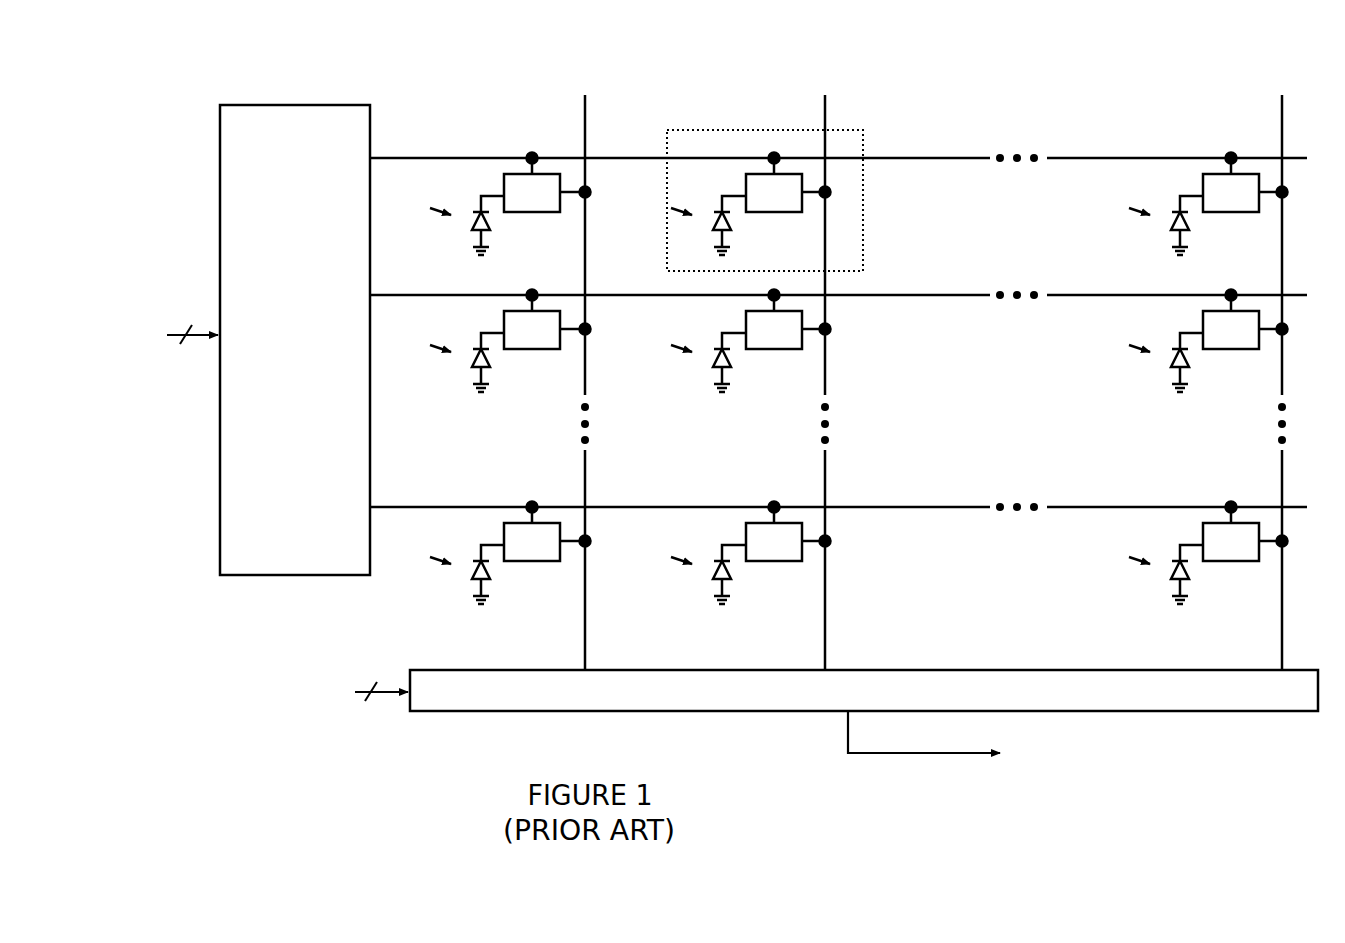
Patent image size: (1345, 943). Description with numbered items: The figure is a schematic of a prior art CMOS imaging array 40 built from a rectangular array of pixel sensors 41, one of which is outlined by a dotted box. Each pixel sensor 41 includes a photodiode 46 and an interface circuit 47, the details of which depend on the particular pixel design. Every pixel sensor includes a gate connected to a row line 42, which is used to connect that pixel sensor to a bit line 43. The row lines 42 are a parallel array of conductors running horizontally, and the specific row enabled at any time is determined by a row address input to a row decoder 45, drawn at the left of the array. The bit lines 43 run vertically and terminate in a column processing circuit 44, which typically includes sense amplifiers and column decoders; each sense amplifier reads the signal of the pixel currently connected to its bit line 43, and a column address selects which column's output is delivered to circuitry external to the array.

The imaging array 40 is at (140, 93).
The pixel sensor 41 is at (731, 130).
The row line 42 is at (918, 158).
The bit line 43 is at (828, 362).
The column processing circuit 44 is at (1292, 711).
The row decoder 45 is at (310, 105).
The photodiode 46 is at (487, 218).
The interface circuit 47 is at (520, 181).